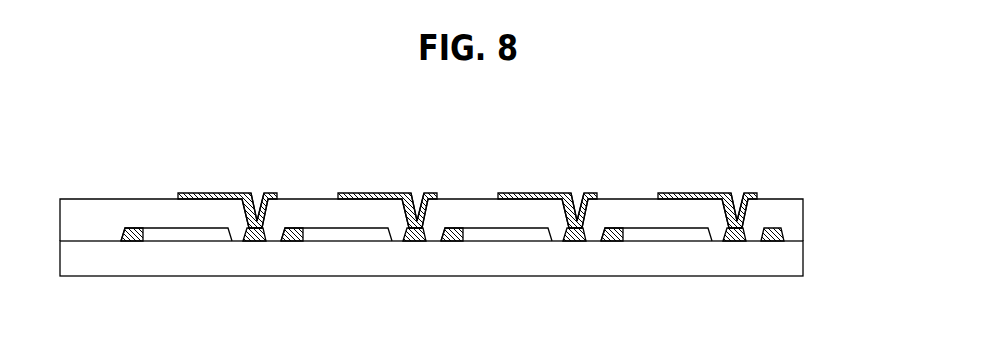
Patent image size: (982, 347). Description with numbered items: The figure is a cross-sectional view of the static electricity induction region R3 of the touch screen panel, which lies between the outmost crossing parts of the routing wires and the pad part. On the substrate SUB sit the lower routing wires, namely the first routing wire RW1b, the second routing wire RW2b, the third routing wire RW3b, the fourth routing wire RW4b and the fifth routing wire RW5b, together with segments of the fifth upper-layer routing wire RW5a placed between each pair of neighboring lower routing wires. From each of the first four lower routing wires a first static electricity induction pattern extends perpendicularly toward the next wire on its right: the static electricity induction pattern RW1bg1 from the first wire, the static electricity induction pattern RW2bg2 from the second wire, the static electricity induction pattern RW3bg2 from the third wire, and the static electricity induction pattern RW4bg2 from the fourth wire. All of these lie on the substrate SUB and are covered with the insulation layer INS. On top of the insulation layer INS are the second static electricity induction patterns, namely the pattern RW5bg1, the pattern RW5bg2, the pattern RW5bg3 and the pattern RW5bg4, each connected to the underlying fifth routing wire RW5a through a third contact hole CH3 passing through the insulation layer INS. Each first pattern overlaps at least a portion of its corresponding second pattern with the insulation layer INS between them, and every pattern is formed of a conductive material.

The static electricity induction region R3 is at (84, 118).
The substrate SUB is at (797, 263).
The insulation layer INS is at (797, 213).
The first 2-2 routing wire RW1b is at (131, 242).
The 1-1 static electricity induction pattern RW1bg1 is at (197, 242).
The second 2-2 routing wire RW2b is at (291, 242).
The 1-2 static electricity induction pattern RW2bg2 is at (357, 242).
The third 2-2 routing wire RW3b is at (452, 242).
The 1-3 static electricity induction pattern RW3bg2 is at (517, 242).
The fourth 2-2 routing wire RW4b is at (611, 242).
The 1-4 static electricity induction pattern RW4bg2 is at (677, 242).
The fifth 2-2 routing wire RW5b is at (772, 242).
The fifth 2-1 routing wire RW5a is at (254, 242).
The 2-1 static electricity induction pattern RW5bg1 is at (212, 193).
The 2-2 static electricity induction pattern RW5bg2 is at (372, 193).
The 2-3 static electricity induction pattern RW5bg3 is at (532, 193).
The 2-4 static electricity induction pattern RW5bg4 is at (692, 193).
The third contact hole CH3 is at (257, 193).